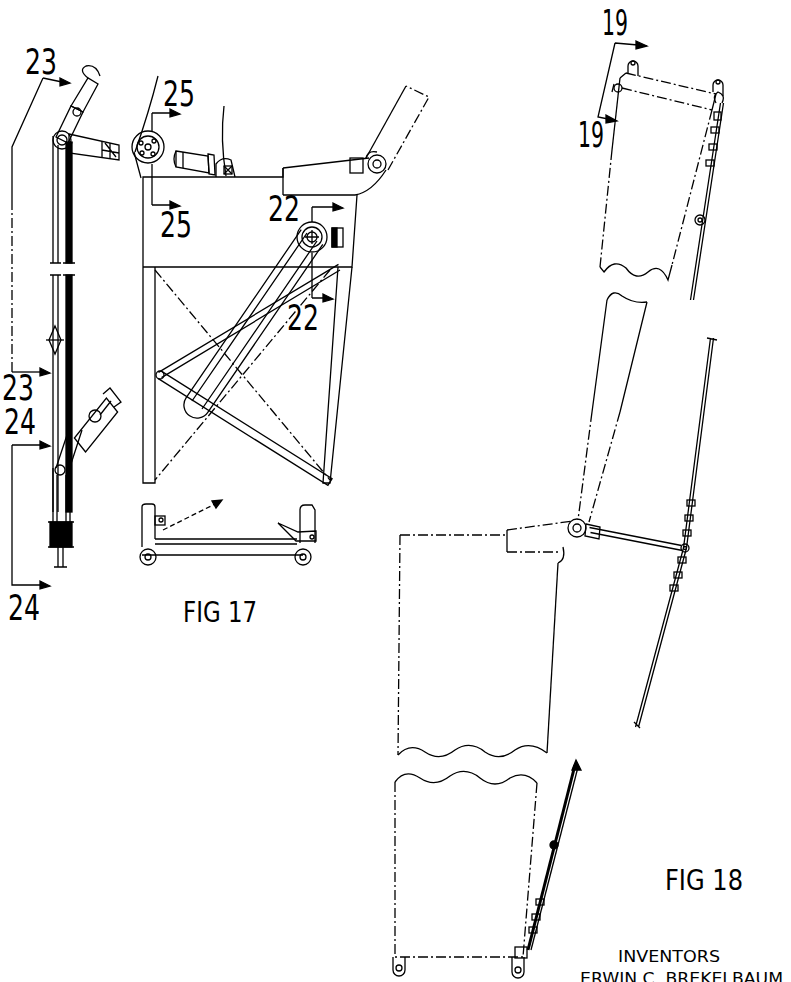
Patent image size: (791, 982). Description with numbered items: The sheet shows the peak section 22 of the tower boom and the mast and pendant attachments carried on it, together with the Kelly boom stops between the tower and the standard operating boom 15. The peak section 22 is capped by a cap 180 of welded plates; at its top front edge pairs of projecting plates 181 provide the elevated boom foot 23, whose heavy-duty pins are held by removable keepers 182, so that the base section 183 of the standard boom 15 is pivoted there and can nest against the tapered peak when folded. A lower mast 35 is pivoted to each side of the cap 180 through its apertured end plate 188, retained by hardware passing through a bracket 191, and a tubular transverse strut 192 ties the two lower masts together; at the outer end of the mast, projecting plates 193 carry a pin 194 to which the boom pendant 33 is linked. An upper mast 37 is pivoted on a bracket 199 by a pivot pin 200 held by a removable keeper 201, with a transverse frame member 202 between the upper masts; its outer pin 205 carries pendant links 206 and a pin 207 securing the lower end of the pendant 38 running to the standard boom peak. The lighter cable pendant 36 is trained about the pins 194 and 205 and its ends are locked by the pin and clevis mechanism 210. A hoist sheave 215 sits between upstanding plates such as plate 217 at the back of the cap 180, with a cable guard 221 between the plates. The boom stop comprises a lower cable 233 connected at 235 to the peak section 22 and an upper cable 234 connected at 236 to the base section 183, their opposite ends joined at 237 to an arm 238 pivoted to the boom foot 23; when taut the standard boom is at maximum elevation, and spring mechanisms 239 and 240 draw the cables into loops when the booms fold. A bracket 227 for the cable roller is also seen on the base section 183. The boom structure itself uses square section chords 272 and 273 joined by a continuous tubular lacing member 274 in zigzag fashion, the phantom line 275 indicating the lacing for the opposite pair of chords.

In FIG. 18, the standard operating boom 15 is at (598, 224).
In FIG. 17, the peak section 22 is at (348, 457).
In FIG. 18, the peak section 22 is at (554, 666).
In FIG. 17, the boom foot 23 is at (392, 162).
In FIG. 18, the boom foot 23 is at (570, 521).
In FIG. 17, the boom pendant 33 is at (66, 564).
In FIG. 17, the lower mast 35 is at (231, 360).
In FIG. 17, the pendant 36 is at (73, 313).
In FIG. 17, the upper mast 37 is at (210, 145).
In FIG. 17, the pendant 38 is at (102, 82).
In FIG. 17, the cap 180 is at (259, 176).
In FIG. 17, the projecting plates 181 is at (357, 183).
In FIG. 18, the projecting plates 181 is at (524, 534).
In FIG. 17, the removable keepers 182 is at (372, 156).
In FIG. 17, the base section 183 is at (413, 117).
In FIG. 18, the base section 183 is at (601, 387).
In FIG. 17, the apertured end plate 188 is at (296, 239).
In FIG. 17, the bracket 191 is at (345, 239).
In FIG. 17, the tubular transverse strut 192 is at (108, 434).
In FIG. 17, the projecting plates 193 is at (77, 470).
In FIG. 17, the pin 194 is at (58, 476).
In FIG. 17, the bracket 199 is at (232, 175).
In FIG. 17, the pivot pin 200 is at (223, 131).
In FIG. 17, the removable keeper 201 is at (228, 178).
In FIG. 17, the transverse frame member 202 is at (96, 163).
In FIG. 17, the pin 205 is at (56, 145).
In FIG. 17, the pendant link 206 is at (70, 120).
In FIG. 17, the pin 207 is at (82, 113).
In FIG. 17, the pin and clevis mechanism 210 is at (53, 337).
In FIG. 17, the hoist sheave 215 is at (157, 141).
In FIG. 17, the upstanding plate 217 is at (137, 166).
In FIG. 17, the cable guard 221 is at (158, 104).
In FIG. 18, the bracket 227 is at (612, 90).
In FIG. 18, the cable 233 is at (651, 691).
In FIG. 18, the cable 234 is at (706, 423).
In FIG. 17, the connection 235 is at (318, 531).
In FIG. 18, the connection 235 is at (540, 945).
In FIG. 18, the connection 236 is at (726, 112).
In FIG. 18, the connection 237 is at (690, 550).
In FIG. 18, the arm 238 is at (636, 537).
In FIG. 18, the spring mechanism 239 is at (560, 845).
In FIG. 18, the spring mechanism 240 is at (706, 221).
In FIG. 17, the square section chord 272 is at (150, 337).
In FIG. 17, the square section chord 273 is at (342, 336).
In FIG. 17, the continuous tubular lacing member 274 is at (289, 454).
In FIG. 17, the phantom line 275 is at (188, 462).